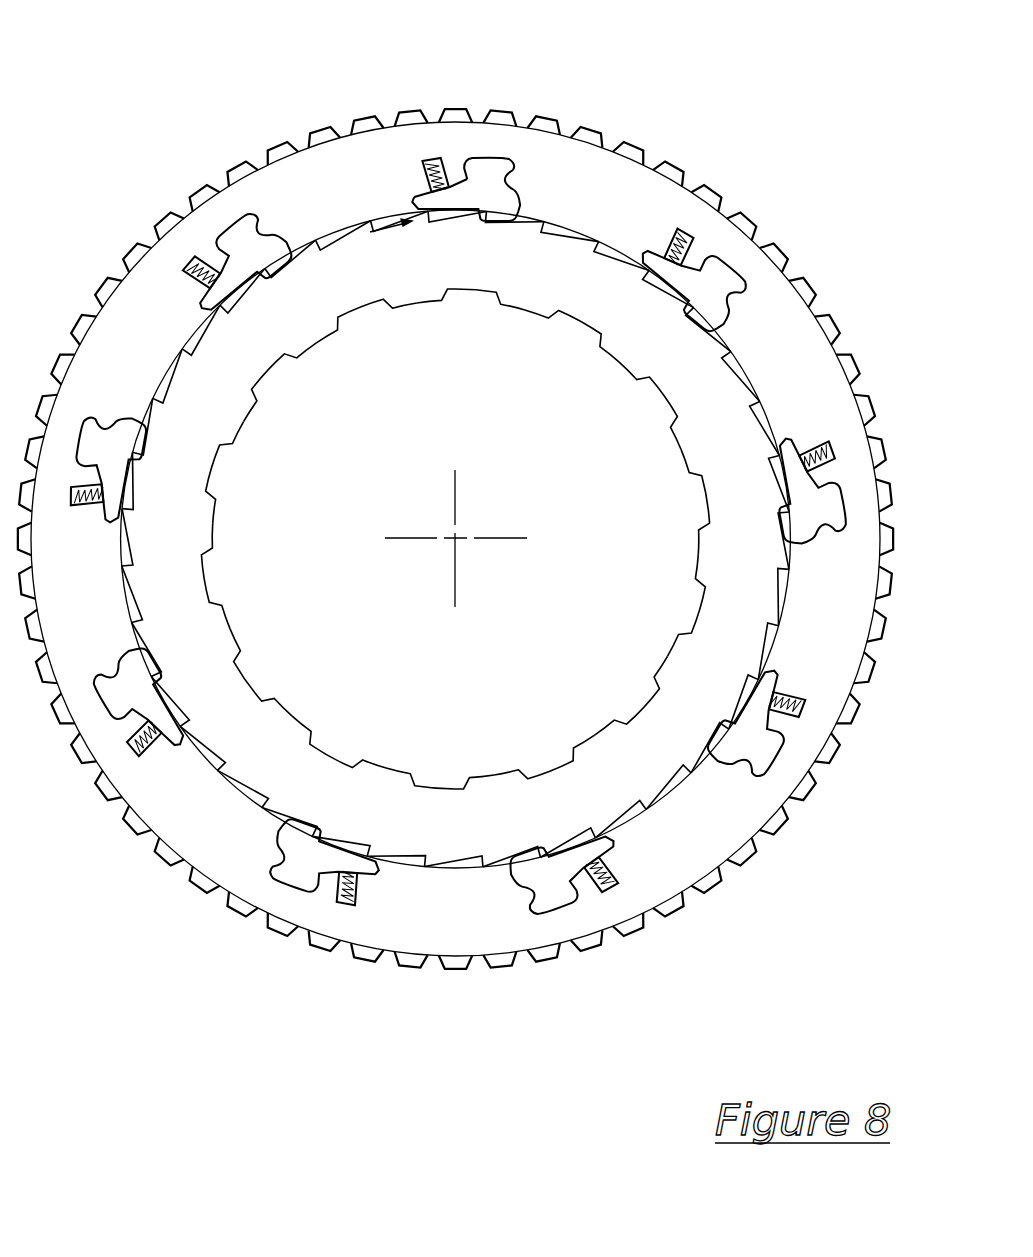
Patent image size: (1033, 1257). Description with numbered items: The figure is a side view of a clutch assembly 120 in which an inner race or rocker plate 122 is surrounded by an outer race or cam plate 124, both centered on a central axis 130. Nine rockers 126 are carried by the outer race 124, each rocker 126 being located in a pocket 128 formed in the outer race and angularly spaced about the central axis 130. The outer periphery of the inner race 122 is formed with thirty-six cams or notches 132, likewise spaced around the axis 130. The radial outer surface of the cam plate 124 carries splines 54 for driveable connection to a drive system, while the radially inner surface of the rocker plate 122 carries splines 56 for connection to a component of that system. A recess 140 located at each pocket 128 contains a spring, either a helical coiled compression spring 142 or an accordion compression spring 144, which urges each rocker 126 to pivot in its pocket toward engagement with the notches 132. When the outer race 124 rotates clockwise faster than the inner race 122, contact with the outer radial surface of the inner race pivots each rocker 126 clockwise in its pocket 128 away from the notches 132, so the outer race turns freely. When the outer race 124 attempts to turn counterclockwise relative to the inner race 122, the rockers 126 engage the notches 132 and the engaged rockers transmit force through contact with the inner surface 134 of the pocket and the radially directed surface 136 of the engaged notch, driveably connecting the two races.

The clutch assembly 120 is at (255, 97).
The inner race 122 is at (456, 539).
The outer race 124 is at (632, 160).
The rocker 126 is at (549, 491).
The pocket 128 is at (722, 393).
The central axis 130 is at (453, 540).
The notches 132 is at (767, 410).
The inner surface of the pocket 134 is at (506, 170).
The radially directed surface 136 is at (338, 241).
The recess 140 is at (690, 438).
The helical coiled compression spring 142 is at (653, 440).
The accordion compression spring 144 is at (422, 184).
The splines 54 is at (872, 402).
The splines 56 is at (678, 645).